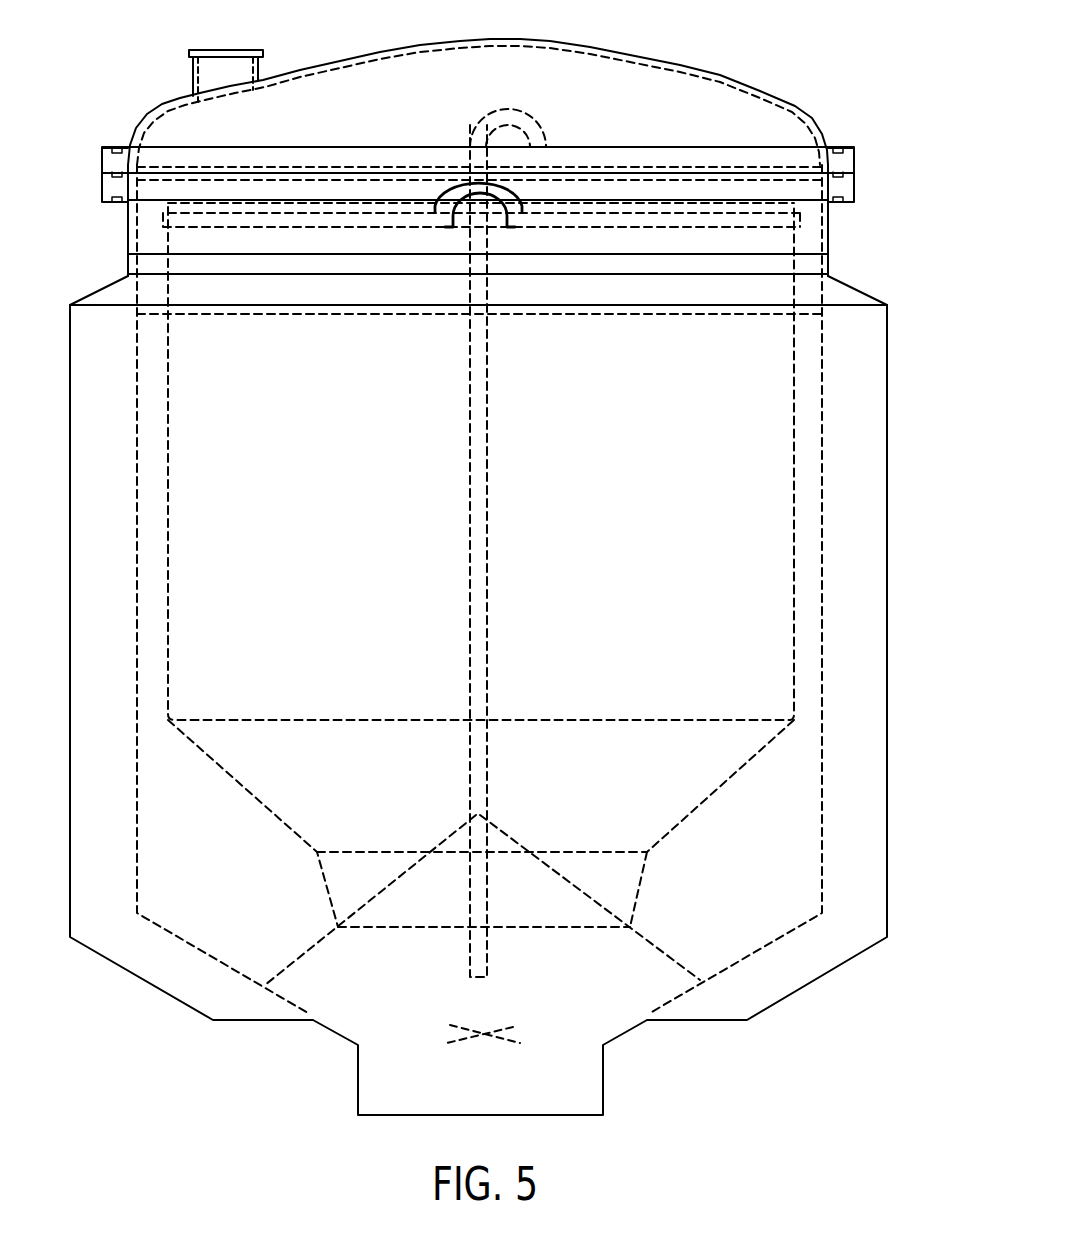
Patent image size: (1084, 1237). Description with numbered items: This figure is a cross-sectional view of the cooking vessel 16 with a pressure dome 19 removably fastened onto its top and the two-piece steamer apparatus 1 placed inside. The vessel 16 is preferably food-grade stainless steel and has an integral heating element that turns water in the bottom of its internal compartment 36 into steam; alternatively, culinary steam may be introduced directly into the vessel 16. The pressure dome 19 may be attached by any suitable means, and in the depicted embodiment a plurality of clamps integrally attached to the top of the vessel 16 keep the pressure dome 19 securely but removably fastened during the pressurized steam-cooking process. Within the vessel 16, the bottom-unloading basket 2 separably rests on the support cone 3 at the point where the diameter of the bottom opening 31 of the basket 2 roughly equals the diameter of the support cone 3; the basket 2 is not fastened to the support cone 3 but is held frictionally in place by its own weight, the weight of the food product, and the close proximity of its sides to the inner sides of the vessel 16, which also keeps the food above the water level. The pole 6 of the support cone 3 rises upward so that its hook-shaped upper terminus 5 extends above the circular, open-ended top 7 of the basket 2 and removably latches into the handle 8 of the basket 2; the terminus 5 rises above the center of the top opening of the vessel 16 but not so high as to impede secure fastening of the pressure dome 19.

The two-piece steamer apparatus 1 is at (695, 828).
The bottom-unloading basket 2 is at (176, 199).
The support cone 3 is at (304, 952).
The hook-shaped upper terminus 5 is at (475, 127).
The pole 6 is at (498, 409).
The circular open-ended top 7 is at (206, 178).
The handle 8 is at (432, 204).
The cooking vessel 16 is at (134, 390).
The pressure dome 19 is at (719, 69).
The bottom opening 31 is at (454, 922).
The internal compartment 36 is at (429, 1027).